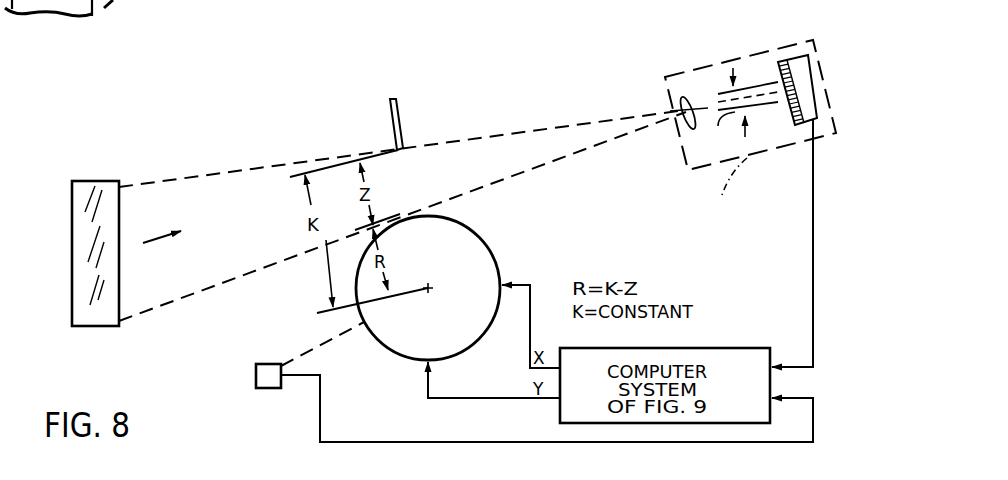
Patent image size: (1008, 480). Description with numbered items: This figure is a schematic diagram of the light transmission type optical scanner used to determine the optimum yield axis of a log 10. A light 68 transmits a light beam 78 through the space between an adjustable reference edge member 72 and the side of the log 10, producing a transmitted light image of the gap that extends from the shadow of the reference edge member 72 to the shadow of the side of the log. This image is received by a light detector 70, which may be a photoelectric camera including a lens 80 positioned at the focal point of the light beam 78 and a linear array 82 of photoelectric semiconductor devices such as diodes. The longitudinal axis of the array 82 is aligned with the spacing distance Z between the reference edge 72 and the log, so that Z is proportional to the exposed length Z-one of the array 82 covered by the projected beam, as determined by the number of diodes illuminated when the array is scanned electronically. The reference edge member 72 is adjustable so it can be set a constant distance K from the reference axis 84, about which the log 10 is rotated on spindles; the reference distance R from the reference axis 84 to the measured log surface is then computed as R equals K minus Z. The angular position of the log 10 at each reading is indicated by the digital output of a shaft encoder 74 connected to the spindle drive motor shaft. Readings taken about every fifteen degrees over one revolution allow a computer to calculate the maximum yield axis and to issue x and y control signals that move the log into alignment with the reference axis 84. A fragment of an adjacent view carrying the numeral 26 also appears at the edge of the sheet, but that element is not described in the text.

The log 10 is at (492, 244).
The adjacent figure fragment 26 is at (154, 8).
The light source 68 is at (100, 181).
The light detector 70 is at (760, 52).
The reference edge member 72 is at (399, 118).
The shaft encoder 74 is at (268, 388).
The light beam 78 is at (255, 171).
The lens 80 is at (680, 110).
The linear array 82 is at (803, 125).
The reference axis 84 is at (428, 294).